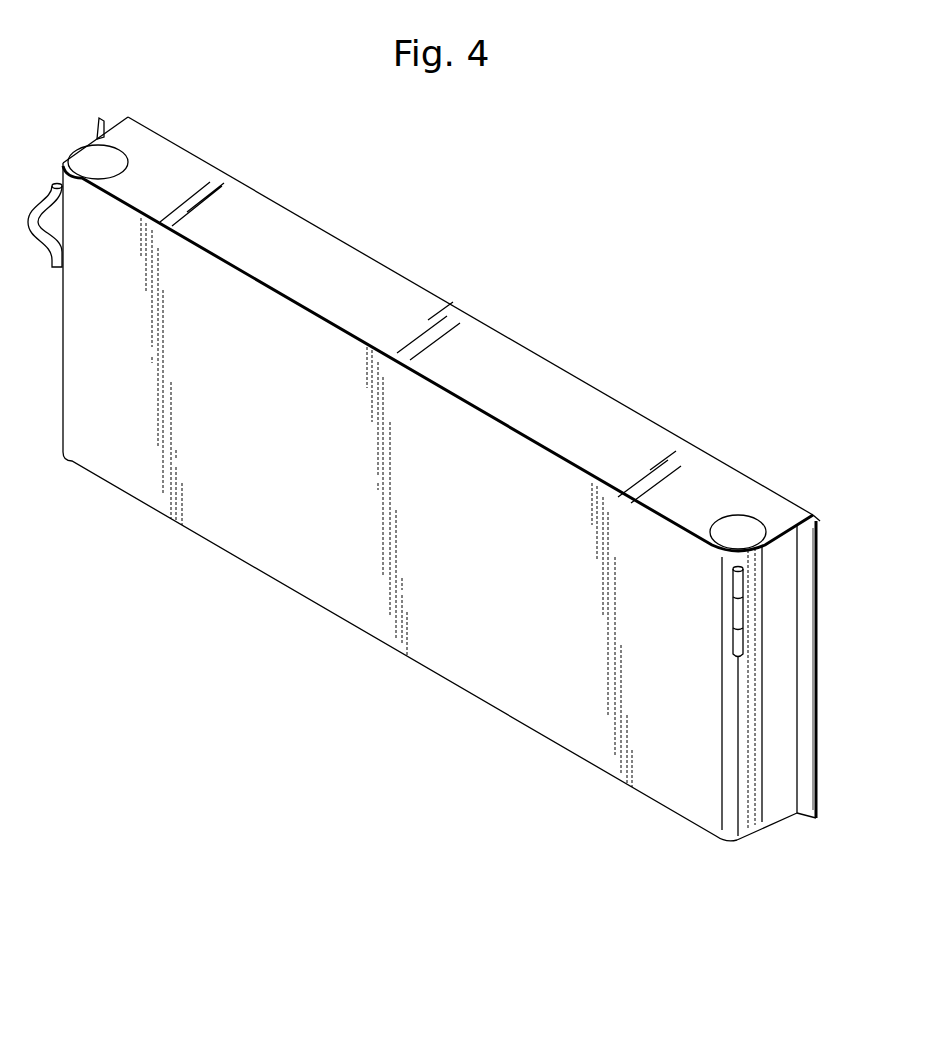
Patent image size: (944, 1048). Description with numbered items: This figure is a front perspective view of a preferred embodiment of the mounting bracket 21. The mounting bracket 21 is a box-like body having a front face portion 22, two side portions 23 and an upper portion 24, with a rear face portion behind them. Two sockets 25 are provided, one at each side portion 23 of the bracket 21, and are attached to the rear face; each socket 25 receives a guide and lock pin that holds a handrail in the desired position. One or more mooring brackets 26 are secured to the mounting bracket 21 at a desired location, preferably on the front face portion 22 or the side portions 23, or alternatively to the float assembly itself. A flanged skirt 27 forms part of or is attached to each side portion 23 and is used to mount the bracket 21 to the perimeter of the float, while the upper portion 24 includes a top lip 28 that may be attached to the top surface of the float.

The mounting bracket 21 is at (541, 765).
The front face portion 22 is at (667, 760).
The side portion 23 is at (772, 805).
The upper portion 24 is at (187, 177).
The socket 25 is at (88, 162).
The mooring bracket 26 is at (43, 247).
The flanged skirt 27 is at (102, 120).
The top lip 28 is at (818, 518).